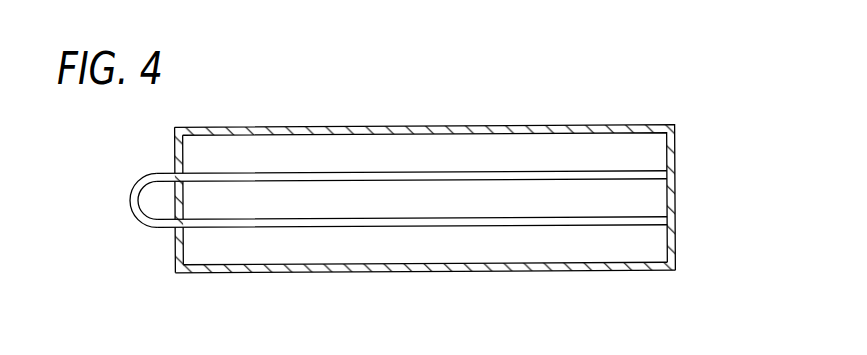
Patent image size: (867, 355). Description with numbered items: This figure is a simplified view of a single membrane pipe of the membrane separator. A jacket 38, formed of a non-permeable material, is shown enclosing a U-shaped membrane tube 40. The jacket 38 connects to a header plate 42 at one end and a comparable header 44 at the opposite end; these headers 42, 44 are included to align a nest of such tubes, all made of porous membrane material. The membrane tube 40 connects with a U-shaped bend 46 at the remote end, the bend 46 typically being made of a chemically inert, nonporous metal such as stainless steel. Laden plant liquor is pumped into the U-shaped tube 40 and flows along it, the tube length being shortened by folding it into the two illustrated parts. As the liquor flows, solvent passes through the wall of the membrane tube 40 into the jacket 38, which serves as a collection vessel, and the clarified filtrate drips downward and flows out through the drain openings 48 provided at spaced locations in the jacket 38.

The jacket 38 is at (618, 270).
The U-shaped membrane tube 40 is at (645, 226).
The header plate 42 is at (675, 150).
The header 44 is at (175, 250).
The U-shaped bend 46 is at (130, 201).
The drain openings 48 is at (290, 268).